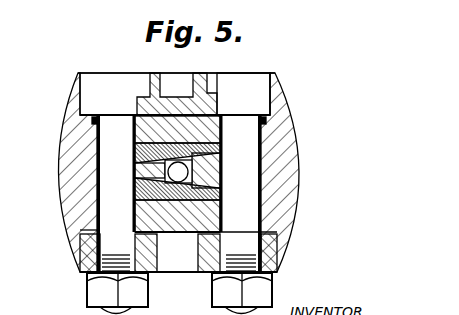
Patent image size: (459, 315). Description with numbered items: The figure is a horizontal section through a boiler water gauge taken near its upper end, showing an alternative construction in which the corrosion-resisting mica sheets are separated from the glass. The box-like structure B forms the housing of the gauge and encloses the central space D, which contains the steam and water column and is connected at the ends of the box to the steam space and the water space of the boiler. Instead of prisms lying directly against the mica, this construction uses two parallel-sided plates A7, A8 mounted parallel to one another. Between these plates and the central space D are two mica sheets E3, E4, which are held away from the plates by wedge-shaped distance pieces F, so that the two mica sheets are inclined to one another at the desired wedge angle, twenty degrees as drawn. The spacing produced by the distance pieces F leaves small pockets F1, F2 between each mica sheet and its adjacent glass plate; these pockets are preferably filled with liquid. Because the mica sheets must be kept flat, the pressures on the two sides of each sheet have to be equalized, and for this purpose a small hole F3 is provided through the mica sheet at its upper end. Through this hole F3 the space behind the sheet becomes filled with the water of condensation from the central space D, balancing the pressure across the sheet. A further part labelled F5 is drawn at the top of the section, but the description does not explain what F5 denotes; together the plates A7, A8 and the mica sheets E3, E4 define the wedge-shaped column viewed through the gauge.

The box-like structure B is at (80, 147).
The wedge-shaped distance pieces F is at (150, 150).
The parallel-sided plate A7 is at (135, 115).
The central stem F5 is at (173, 147).
The small pocket F1 is at (219, 113).
The mica sheet E3 is at (222, 158).
The central space D is at (223, 163).
The mica sheet E4 is at (222, 180).
The small hole F3 is at (221, 226).
The parallel-sided plate A8 is at (174, 222).
The small pocket F2 is at (186, 235).